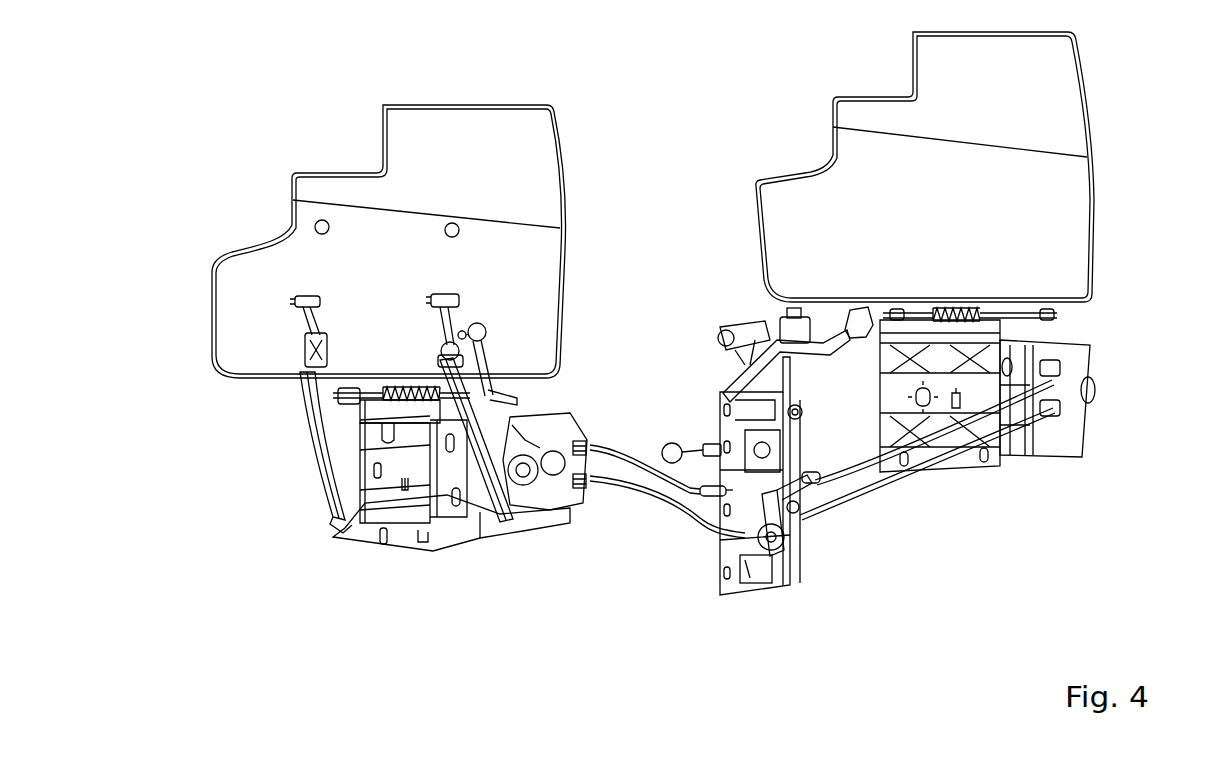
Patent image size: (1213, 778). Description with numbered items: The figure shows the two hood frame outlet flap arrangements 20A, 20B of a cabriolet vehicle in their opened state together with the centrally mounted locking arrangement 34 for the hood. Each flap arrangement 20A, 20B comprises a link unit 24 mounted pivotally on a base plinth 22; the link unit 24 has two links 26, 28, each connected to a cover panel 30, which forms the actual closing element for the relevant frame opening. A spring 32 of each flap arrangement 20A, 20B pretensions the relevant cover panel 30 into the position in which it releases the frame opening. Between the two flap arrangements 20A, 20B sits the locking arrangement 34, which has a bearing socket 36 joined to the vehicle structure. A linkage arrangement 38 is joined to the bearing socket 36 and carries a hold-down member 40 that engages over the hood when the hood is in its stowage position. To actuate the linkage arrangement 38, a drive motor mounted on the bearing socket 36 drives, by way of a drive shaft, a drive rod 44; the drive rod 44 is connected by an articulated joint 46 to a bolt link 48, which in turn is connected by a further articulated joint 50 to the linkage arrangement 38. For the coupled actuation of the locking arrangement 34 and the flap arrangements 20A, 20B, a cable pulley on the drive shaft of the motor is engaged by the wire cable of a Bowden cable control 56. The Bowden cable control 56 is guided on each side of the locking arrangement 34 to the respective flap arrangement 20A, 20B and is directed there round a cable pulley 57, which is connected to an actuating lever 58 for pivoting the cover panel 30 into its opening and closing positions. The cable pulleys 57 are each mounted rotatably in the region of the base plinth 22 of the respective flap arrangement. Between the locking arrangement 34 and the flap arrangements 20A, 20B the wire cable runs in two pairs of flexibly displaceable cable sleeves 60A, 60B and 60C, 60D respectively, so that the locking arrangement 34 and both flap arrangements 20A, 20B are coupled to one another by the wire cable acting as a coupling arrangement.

The flap arrangement 20A is at (237, 242).
The flap arrangement 20B is at (1093, 110).
The base plinth 22 is at (400, 530).
The link unit 24 is at (323, 455).
The link 26 is at (320, 425).
The link 28 is at (470, 433).
The cover panel 30 is at (430, 145).
The spring 32 is at (403, 400).
The locking arrangement 34 is at (780, 593).
The bearing socket 36 is at (752, 583).
The linkage arrangement 38 is at (722, 323).
The hold-down member 40 is at (827, 350).
The drive rod 44 is at (778, 543).
The articulated joint 46 is at (800, 512).
The bolt link 48 is at (812, 482).
The articulated joint 50 is at (805, 403).
The Bowden cable control 56 is at (1057, 397).
The cable pulley 57 is at (533, 487).
The actuating lever 58 is at (490, 377).
The cable sleeve 60A is at (633, 483).
The cable sleeve 60B is at (635, 462).
The cable sleeve 60C is at (877, 458).
The cable sleeve 60D is at (903, 470).